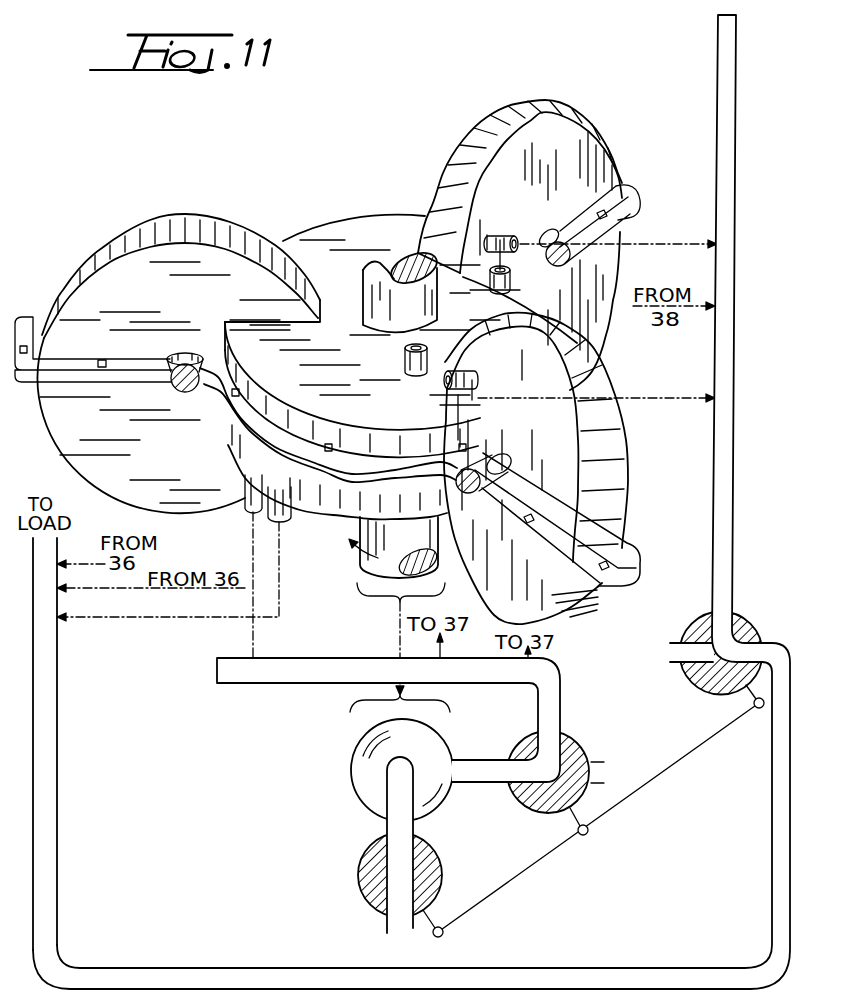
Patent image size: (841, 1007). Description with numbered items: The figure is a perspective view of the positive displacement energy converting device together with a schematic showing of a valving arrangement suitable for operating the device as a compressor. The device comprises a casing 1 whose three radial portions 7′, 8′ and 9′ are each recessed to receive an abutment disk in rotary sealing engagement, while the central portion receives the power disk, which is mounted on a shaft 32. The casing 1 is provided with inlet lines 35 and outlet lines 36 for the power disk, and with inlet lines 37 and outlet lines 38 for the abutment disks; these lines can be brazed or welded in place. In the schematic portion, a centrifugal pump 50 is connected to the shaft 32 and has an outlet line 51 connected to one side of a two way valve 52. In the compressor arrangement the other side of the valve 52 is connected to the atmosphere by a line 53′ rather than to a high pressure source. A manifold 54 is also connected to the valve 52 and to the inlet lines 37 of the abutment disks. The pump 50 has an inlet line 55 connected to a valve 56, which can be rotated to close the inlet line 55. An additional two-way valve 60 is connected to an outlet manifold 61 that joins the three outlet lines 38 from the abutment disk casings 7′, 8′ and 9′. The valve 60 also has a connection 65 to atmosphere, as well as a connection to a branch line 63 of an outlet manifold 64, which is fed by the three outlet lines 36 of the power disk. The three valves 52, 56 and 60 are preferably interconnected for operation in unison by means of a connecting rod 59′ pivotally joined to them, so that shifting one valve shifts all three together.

The casing 1 is at (353, 208).
The radial portion of the casing 7′ is at (663, 462).
The radial portion of the casing 8′ is at (656, 122).
The radial portion of the casing 9′ is at (172, 213).
The shaft 32 is at (365, 272).
The inlet lines 35 is at (511, 278).
The outlet lines 36 is at (292, 513).
The inlet lines 37 is at (245, 490).
The outlet lines 38 is at (497, 233).
The centrifugal pump 50 is at (356, 760).
The outlet line 51 is at (466, 760).
The two way valve 52 is at (534, 814).
The line to atmosphere 53′ is at (641, 728).
The manifold 54 is at (278, 658).
The inlet line 55 is at (386, 830).
The valve 56 is at (368, 890).
The connecting rod 59′ is at (522, 882).
The two-way valve 60 is at (762, 633).
The outlet manifold 61 is at (736, 488).
The branch line 63 is at (130, 965).
The outlet manifold 64 is at (57, 780).
The connection to atmosphere 65 is at (682, 650).